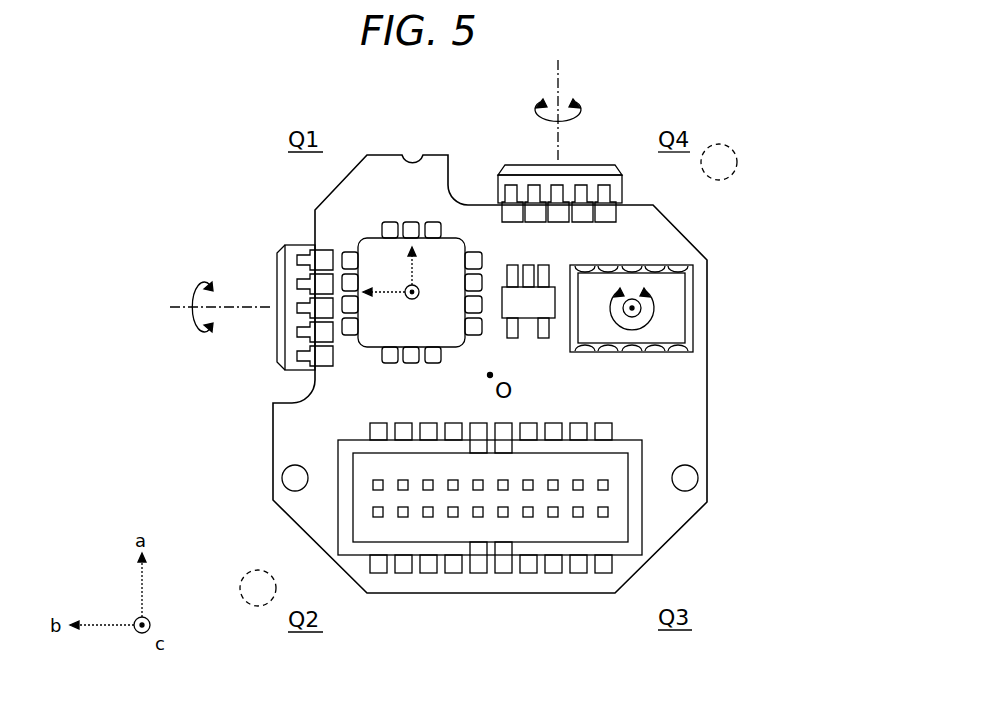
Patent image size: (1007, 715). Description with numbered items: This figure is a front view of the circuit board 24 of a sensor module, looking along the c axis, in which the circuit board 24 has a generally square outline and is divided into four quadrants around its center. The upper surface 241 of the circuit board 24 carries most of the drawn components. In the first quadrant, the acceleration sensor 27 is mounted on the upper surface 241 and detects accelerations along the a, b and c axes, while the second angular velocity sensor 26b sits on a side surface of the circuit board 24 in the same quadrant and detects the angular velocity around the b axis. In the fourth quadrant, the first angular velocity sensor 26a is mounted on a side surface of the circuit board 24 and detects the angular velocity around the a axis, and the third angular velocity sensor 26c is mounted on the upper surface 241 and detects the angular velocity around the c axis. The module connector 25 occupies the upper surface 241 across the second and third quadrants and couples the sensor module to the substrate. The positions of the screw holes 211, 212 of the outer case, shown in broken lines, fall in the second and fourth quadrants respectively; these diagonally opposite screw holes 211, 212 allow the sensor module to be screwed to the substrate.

The circuit board 24 is at (690, 233).
The upper surface 241 is at (670, 443).
The module connector 25 is at (565, 525).
The first angular velocity sensor 26a is at (595, 180).
The second angular velocity sensor 26b is at (293, 272).
The third angular velocity sensor 26c is at (672, 293).
The acceleration sensor 27 is at (458, 250).
The screw hole 211 is at (255, 571).
The screw hole 212 is at (718, 144).